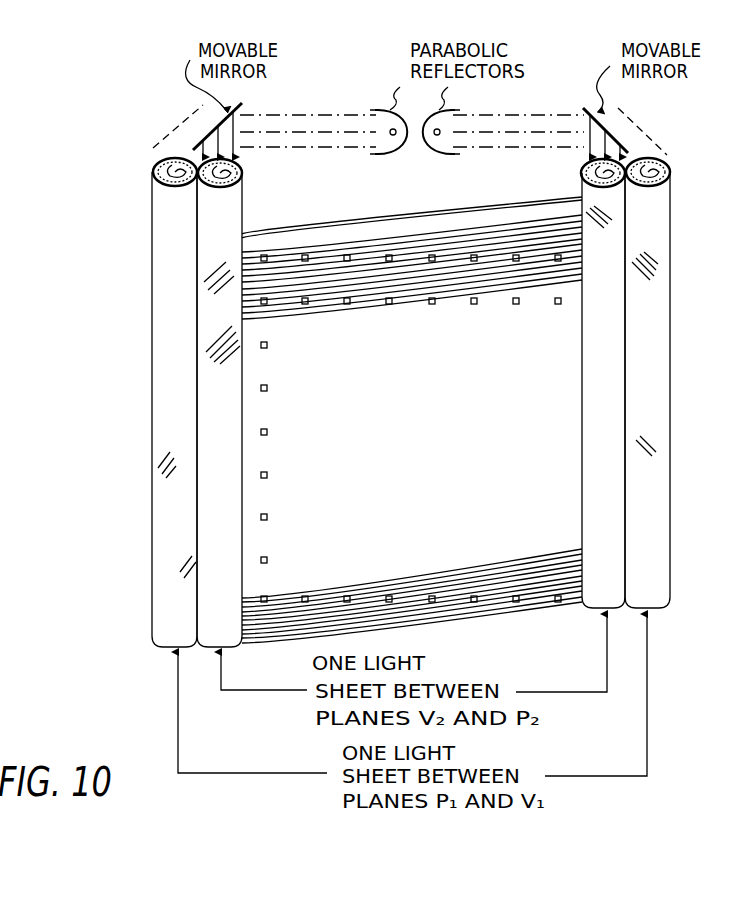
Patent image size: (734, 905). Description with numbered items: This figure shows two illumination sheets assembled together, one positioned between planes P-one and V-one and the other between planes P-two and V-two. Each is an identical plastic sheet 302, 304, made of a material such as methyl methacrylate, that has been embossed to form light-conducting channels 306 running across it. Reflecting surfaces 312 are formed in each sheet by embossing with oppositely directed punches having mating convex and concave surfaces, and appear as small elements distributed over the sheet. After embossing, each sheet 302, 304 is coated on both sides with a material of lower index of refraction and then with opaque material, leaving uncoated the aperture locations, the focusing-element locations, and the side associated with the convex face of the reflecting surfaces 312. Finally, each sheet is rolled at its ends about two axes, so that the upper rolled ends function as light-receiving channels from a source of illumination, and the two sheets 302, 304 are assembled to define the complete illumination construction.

The sheet 302 is at (178, 362).
The sheet 304 is at (210, 322).
The light-conducting channels 306 is at (406, 592).
The reflecting surfaces 312 is at (268, 345).